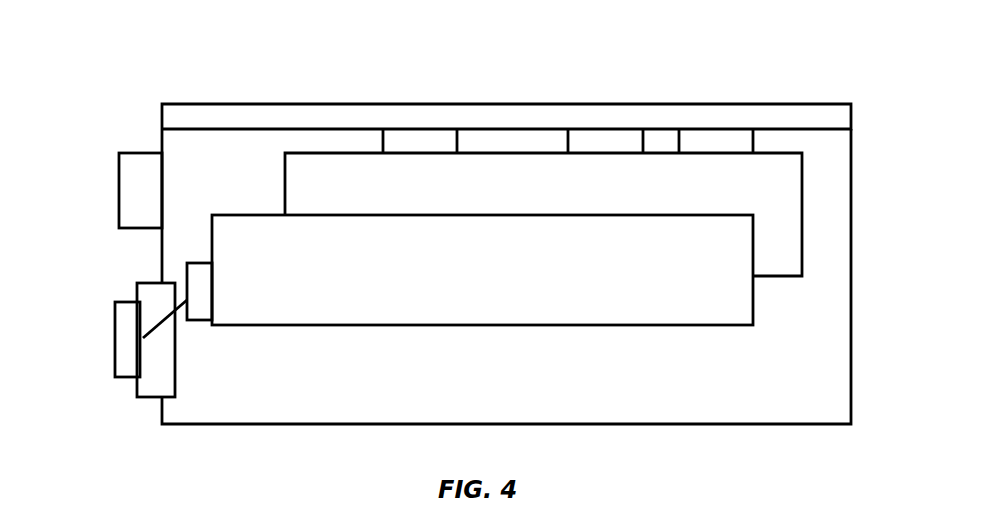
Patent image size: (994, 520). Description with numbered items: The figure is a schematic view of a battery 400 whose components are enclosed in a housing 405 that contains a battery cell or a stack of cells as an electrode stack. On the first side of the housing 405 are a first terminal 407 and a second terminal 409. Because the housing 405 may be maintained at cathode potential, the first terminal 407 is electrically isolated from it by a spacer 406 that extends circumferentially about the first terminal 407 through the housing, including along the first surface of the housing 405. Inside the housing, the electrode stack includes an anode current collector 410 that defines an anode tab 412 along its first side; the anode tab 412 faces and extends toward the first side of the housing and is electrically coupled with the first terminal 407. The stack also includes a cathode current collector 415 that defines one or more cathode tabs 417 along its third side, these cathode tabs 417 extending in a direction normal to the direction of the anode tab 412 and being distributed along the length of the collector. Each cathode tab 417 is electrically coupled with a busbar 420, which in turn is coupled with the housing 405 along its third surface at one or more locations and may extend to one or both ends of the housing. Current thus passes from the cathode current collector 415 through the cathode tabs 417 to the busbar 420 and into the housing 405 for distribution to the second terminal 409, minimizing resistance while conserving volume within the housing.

The battery 400 is at (79, 78).
The housing 405 is at (290, 425).
The spacer 406 is at (147, 398).
The first terminal 407 is at (115, 349).
The second terminal 409 is at (118, 207).
The anode current collector 410 is at (485, 326).
The anode tab 412 is at (200, 322).
The cathode current collector 415 is at (284, 200).
The cathode tabs 417 is at (459, 135).
The busbar 420 is at (853, 115).